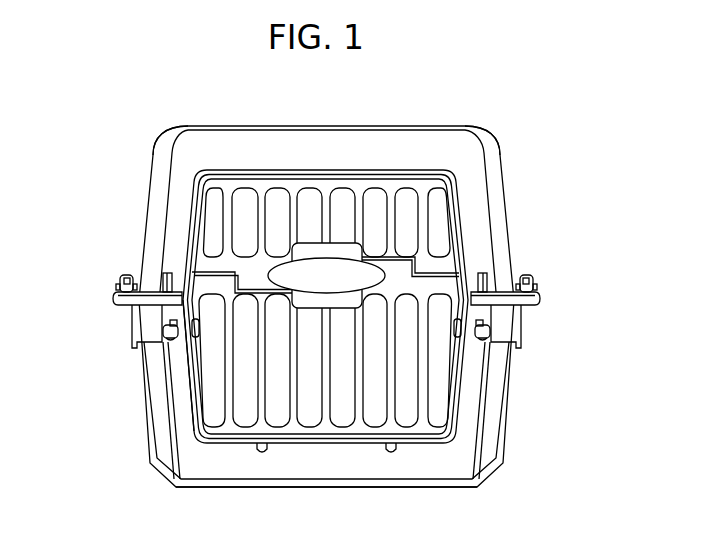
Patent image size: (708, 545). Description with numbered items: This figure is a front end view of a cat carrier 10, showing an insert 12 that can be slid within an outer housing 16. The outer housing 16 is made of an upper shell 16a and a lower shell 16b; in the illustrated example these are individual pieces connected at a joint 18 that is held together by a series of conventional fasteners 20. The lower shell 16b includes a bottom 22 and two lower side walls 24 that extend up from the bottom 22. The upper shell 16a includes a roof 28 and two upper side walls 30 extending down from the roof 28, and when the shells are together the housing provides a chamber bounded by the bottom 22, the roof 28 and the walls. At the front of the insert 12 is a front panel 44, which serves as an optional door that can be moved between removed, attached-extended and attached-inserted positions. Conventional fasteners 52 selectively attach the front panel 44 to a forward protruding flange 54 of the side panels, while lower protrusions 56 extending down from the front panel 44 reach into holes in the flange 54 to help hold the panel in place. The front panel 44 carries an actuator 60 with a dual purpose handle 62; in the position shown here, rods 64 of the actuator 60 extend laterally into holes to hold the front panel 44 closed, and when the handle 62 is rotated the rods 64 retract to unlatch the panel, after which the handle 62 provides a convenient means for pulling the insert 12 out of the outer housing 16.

The cat carrier 10 is at (603, 121).
The insert 12 is at (328, 466).
The outer housing 16 is at (128, 334).
The upper shell 16a is at (506, 204).
The lower shell 16b is at (511, 403).
The joint 18 is at (546, 320).
The fasteners 20 is at (526, 273).
The bottom 22 is at (238, 489).
The lower side walls 24 is at (143, 391).
The roof 28 is at (287, 126).
The upper side walls 30 is at (158, 183).
The front panel 44 is at (224, 185).
The fasteners 52 is at (172, 349).
The flange 54 is at (186, 412).
The lower protrusions 56 is at (392, 456).
The actuator 60 is at (343, 243).
The handle 62 is at (313, 258).
The rods 64 is at (166, 272).